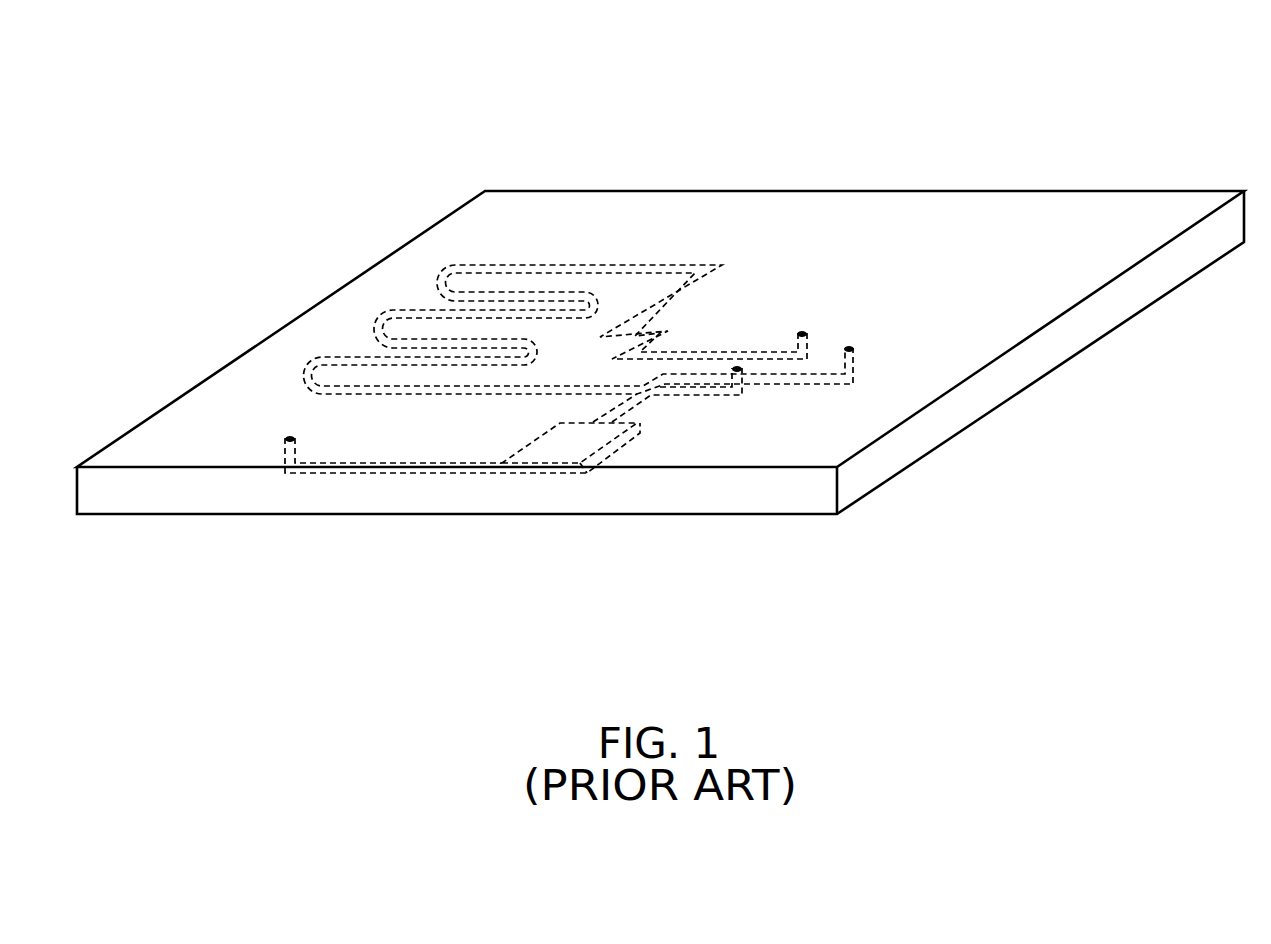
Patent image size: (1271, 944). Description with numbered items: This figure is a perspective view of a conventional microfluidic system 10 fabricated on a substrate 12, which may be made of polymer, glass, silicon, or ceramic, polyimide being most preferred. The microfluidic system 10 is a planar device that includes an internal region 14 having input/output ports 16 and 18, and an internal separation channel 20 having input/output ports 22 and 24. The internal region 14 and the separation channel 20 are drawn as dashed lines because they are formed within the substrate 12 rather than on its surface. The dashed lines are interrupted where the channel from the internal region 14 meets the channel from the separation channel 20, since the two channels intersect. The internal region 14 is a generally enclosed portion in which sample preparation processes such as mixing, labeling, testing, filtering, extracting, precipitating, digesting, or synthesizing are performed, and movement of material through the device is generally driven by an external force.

The microfluidic system 10 is at (908, 84).
The substrate 12 is at (500, 197).
The internal region 14 is at (545, 440).
The input/output port 16 is at (288, 437).
The input/output port 18 is at (848, 350).
The internal separation channel 20 is at (505, 265).
The input/output port 22 is at (800, 333).
The input/output port 24 is at (740, 368).